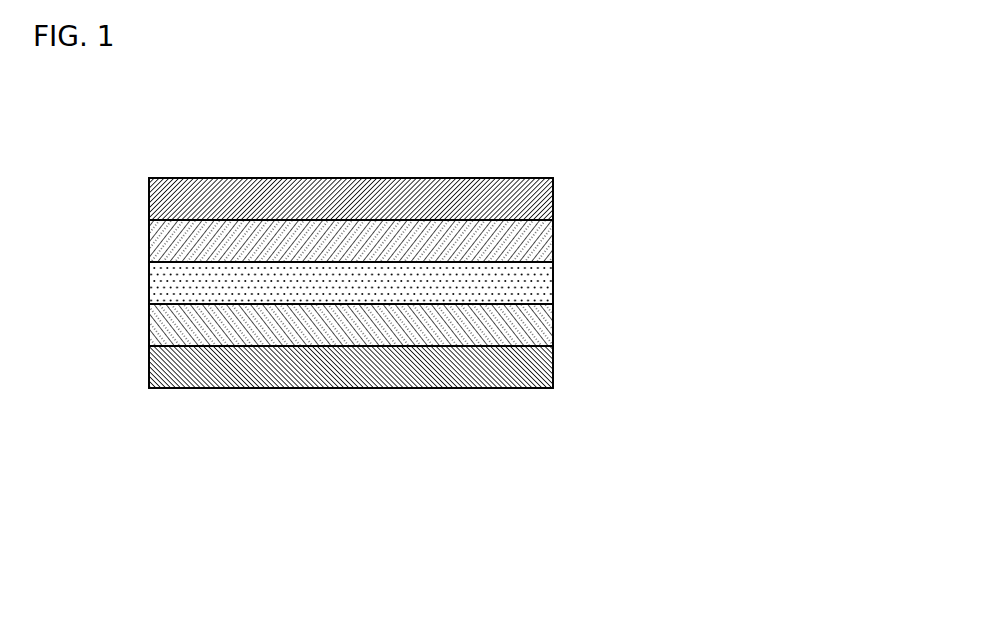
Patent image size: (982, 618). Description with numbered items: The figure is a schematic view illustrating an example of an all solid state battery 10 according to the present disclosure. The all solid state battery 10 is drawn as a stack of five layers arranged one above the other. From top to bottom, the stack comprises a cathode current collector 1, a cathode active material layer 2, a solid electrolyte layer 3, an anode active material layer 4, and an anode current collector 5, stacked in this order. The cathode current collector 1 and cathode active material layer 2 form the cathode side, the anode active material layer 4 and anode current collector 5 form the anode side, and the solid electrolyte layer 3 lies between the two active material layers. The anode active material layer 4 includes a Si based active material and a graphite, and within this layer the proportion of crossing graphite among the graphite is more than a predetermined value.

The all solid state battery 10 is at (557, 141).
The cathode current collector 1 is at (553, 201).
The cathode active material layer 2 is at (540, 246).
The solid electrolyte layer 3 is at (537, 291).
The anode active material layer 4 is at (540, 331).
The anode current collector 5 is at (540, 372).